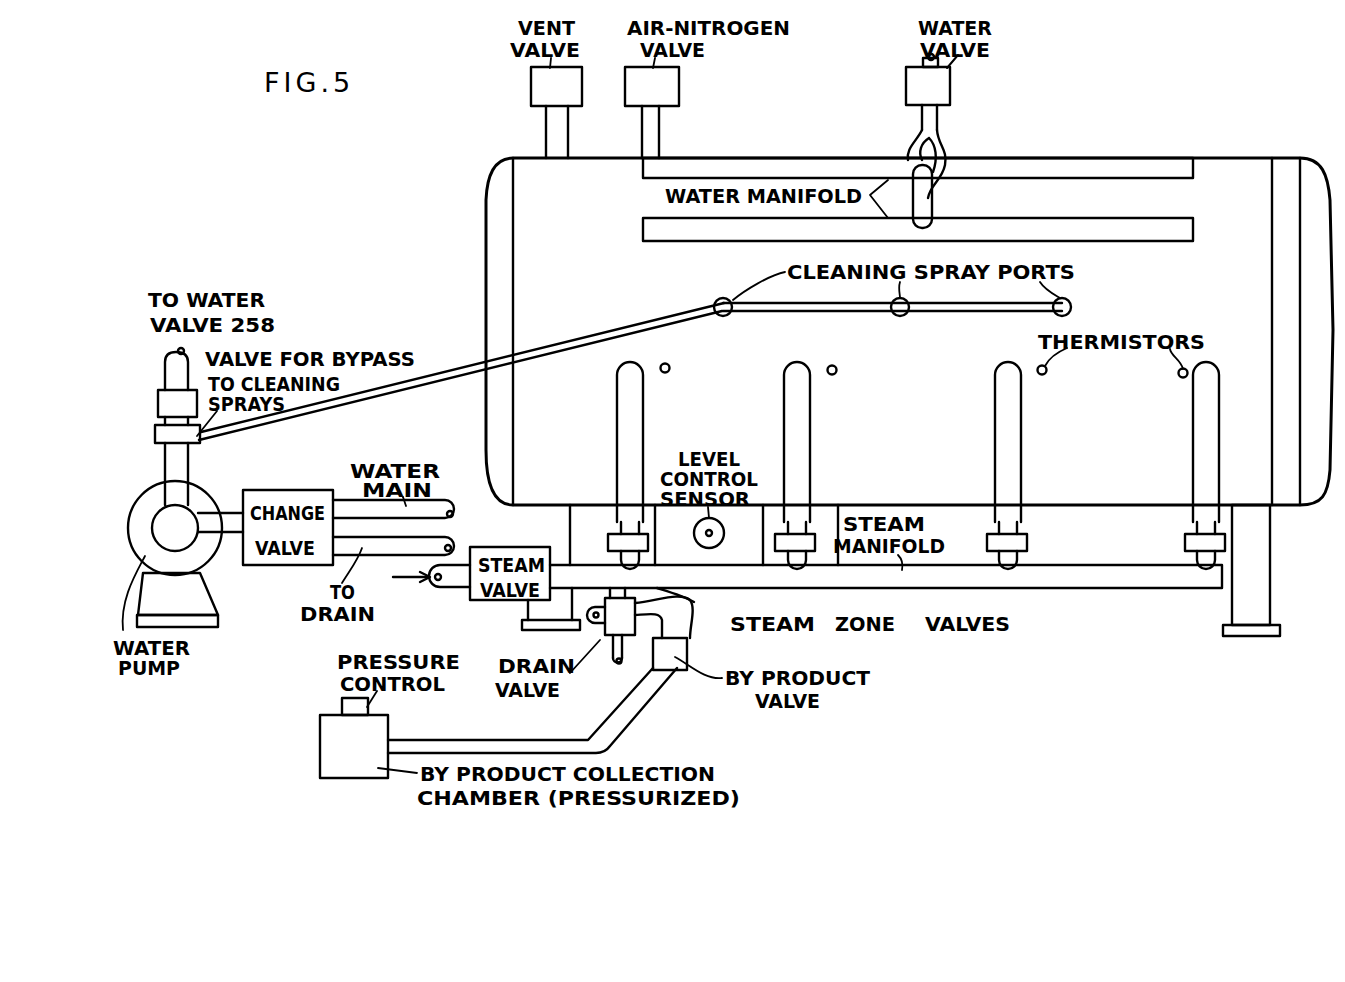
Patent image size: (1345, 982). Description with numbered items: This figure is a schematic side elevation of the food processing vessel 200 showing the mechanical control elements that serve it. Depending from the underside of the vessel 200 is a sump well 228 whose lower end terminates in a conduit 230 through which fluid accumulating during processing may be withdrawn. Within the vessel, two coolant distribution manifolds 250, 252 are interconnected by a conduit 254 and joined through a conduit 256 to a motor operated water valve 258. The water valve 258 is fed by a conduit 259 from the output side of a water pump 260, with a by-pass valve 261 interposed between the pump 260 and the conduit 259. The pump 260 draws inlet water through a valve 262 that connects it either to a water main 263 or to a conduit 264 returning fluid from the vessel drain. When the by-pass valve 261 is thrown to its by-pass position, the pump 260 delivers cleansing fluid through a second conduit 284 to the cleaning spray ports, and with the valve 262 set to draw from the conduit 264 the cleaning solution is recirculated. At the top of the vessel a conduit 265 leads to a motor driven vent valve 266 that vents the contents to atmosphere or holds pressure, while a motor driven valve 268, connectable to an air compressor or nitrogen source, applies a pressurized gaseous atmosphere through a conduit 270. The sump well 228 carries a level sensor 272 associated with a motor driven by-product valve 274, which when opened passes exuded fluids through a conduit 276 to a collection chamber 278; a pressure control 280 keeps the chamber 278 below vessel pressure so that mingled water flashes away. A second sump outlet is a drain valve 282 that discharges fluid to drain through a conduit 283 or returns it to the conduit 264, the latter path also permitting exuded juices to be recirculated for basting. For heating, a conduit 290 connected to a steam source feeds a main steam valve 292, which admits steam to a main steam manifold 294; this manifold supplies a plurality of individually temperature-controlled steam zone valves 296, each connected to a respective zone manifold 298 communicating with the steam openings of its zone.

The vessel 200 is at (1140, 142).
The sump well 228 is at (758, 517).
The conduit 230 is at (692, 598).
The coolant distribution manifold 250 is at (1168, 230).
The coolant distribution manifold 252 is at (1178, 168).
The conduit 254 is at (930, 207).
The conduit 256 is at (942, 146).
The water valve 258 is at (940, 80).
The conduit 259 is at (925, 61).
The water pump 260 is at (143, 498).
The by-pass valve 261 is at (158, 433).
The valve 262 is at (273, 490).
The water main 263 is at (443, 500).
The conduit 264 is at (447, 540).
The conduit 265 is at (548, 130).
The vent valve 266 is at (545, 83).
The valve 268 is at (665, 90).
The conduit 270 is at (655, 135).
The level sensor 272 is at (742, 540).
The by-product valve 274 is at (676, 672).
The conduit 276 is at (611, 721).
The collection chamber 278 is at (365, 775).
The pressure control 280 is at (342, 703).
The drain valve 282 is at (610, 598).
The conduit 283 is at (613, 657).
The conduit 284 is at (448, 370).
The conduit 290 is at (460, 583).
The main steam valve 292 is at (493, 600).
The main steam manifold 294 is at (1155, 585).
The steam zone valves 296 is at (793, 608).
The zone manifold 298 is at (630, 418).